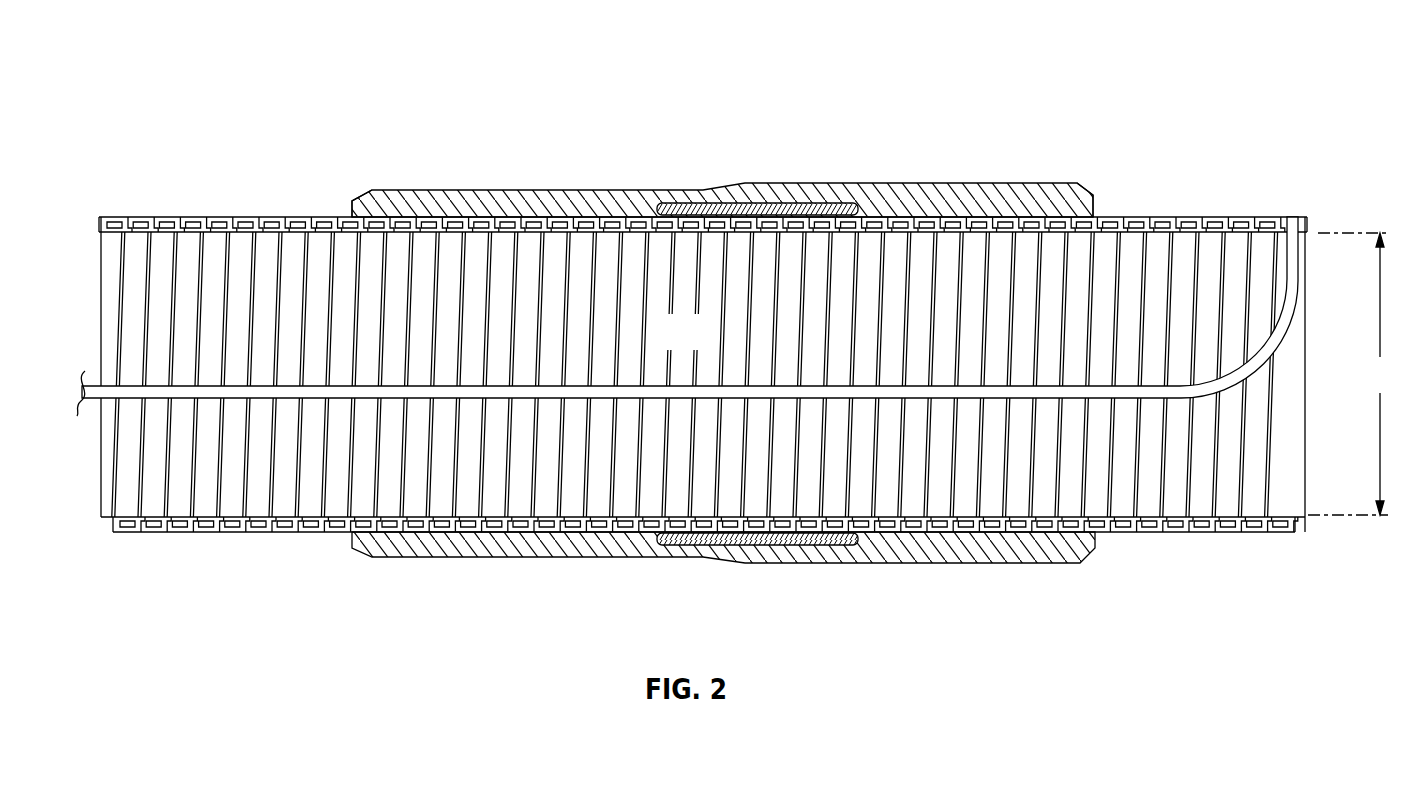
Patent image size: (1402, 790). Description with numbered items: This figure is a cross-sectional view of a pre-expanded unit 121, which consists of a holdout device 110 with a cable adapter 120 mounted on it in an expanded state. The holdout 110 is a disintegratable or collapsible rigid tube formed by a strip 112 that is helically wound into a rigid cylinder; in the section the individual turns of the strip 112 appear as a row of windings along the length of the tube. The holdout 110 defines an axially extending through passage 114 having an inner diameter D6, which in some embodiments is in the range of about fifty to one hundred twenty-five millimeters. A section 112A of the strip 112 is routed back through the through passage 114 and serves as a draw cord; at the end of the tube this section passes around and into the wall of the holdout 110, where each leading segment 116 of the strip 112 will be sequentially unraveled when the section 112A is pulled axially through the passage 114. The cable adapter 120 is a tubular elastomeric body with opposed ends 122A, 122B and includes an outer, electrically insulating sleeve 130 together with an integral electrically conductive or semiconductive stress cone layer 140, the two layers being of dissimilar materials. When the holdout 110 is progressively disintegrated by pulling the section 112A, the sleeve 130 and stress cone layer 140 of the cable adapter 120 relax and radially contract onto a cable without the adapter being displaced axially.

The pre-expanded unit 121 is at (736, 348).
The holdout device 110 is at (722, 428).
The strip 112 is at (205, 528).
The section of the strip 112A is at (1203, 386).
The through passage 114 is at (705, 343).
The leading segment 116 is at (1288, 300).
The cable adapter 120 is at (723, 405).
The end of the cable adapter 122A is at (1094, 209).
The end of the cable adapter 122B is at (356, 206).
The electrically insulating sleeve 130 is at (1077, 557).
The stress cone layer 140 is at (768, 536).
The inner diameter D6 is at (1351, 374).